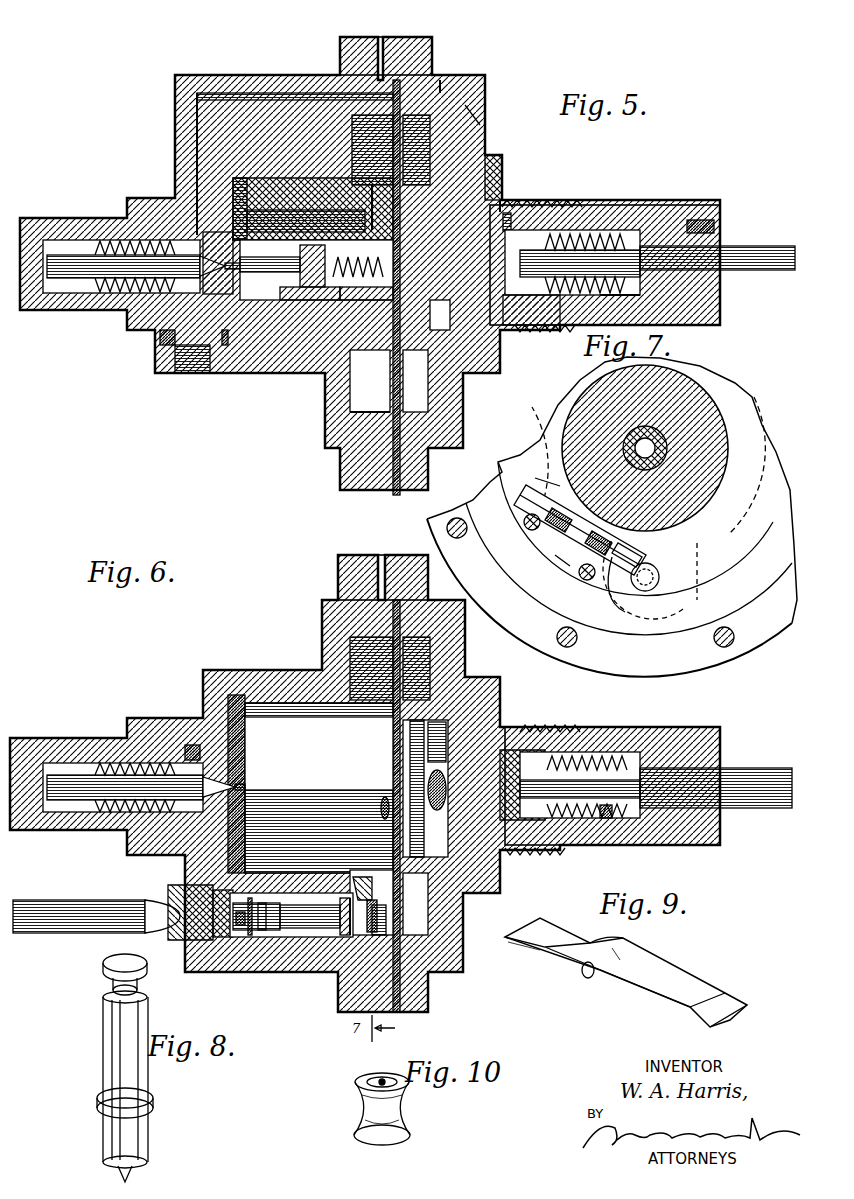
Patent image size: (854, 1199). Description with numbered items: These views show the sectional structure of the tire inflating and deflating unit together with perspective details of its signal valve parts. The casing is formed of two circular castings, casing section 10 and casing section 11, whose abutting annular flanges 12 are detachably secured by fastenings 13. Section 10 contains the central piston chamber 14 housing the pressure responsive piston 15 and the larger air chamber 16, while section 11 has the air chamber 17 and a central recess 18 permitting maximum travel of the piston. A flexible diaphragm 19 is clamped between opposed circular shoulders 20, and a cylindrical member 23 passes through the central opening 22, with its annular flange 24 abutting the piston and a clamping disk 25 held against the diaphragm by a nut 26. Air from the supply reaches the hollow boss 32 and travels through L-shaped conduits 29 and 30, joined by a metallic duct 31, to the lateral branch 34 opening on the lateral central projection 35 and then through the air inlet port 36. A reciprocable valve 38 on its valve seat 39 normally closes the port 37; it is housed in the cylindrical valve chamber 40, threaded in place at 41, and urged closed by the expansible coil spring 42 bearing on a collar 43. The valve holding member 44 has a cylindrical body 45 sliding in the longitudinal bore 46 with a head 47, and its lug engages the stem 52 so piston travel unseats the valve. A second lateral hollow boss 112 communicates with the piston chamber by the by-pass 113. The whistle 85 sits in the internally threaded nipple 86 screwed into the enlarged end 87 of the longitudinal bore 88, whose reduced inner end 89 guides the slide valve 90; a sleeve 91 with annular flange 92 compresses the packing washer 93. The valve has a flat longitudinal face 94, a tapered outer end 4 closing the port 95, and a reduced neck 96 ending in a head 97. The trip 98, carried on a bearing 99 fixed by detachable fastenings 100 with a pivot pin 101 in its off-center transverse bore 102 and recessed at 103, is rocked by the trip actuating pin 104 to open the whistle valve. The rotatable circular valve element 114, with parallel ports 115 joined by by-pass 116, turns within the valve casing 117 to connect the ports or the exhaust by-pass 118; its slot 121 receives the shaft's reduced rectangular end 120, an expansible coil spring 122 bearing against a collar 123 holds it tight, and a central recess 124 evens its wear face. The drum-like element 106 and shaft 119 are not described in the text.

In FIG. 8, the tapered outer end 4 is at (130, 1172).
In FIG. 5, the casing section 10 is at (322, 76).
In FIG. 6, the casing section 10 is at (322, 612).
In FIG. 5, the casing section 11 is at (470, 80).
In FIG. 6, the casing section 11 is at (470, 680).
In FIG. 5, the annular flanges 12 is at (372, 37).
In FIG. 6, the annular flanges 12 is at (375, 552).
In FIG. 7, the annular flanges 12 is at (752, 650).
In FIG. 7, the fastenings 13 is at (460, 538).
In FIG. 5, the piston chamber 14 is at (285, 350).
In FIG. 6, the piston chamber 14 is at (200, 862).
In FIG. 5, the piston 15 is at (283, 345).
In FIG. 6, the piston 15 is at (300, 705).
In FIG. 7, the piston 15 is at (700, 412).
In FIG. 5, the air chamber 16 is at (372, 130).
In FIG. 7, the air chamber 16 is at (635, 498).
In FIG. 5, the air chamber 17 is at (420, 130).
In FIG. 6, the air chamber 17 is at (416, 668).
In FIG. 5, the central recess 18 is at (503, 202).
In FIG. 6, the central recess 18 is at (502, 886).
In FIG. 5, the flexible diaphragm 19 is at (330, 410).
In FIG. 6, the flexible diaphragm 19 is at (464, 948).
In FIG. 5, the circular shoulders 20 is at (398, 82).
In FIG. 6, the circular shoulders 20 is at (398, 600).
In FIG. 7, the circular shoulders 20 is at (629, 569).
In FIG. 5, the central opening 22 is at (378, 230).
In FIG. 5, the cylindrical member 23 is at (345, 280).
In FIG. 7, the cylindrical member 23 is at (667, 446).
In FIG. 5, the annular flange 24 is at (370, 381).
In FIG. 5, the clamping disk 25 is at (415, 381).
In FIG. 6, the clamping disk 25 is at (415, 904).
In FIG. 5, the nut 26 is at (491, 160).
In FIG. 6, the nut 26 is at (425, 752).
In FIG. 5, the L-shaped conduit 29 is at (203, 93).
In FIG. 5, the L-shaped conduit 30 is at (470, 112).
In FIG. 5, the metallic duct 31 is at (441, 82).
In FIG. 5, the hollow boss 32 is at (160, 210).
In FIG. 5, the lateral branch 34 is at (542, 203).
In FIG. 5, the lateral central projection 35 is at (507, 213).
In FIG. 5, the air inlet port 36 is at (440, 315).
In FIG. 6, the air inlet port 36 is at (515, 750).
In FIG. 5, the port 37 is at (275, 222).
In FIG. 6, the port 37 is at (245, 762).
In FIG. 5, the reciprocable valve 38 is at (135, 278).
In FIG. 6, the reciprocable valve 38 is at (82, 780).
In FIG. 5, the valve seat 39 is at (232, 285).
In FIG. 6, the valve seat 39 is at (162, 851).
In FIG. 5, the cylindrical valve chamber 40 is at (55, 311).
In FIG. 6, the cylindrical valve chamber 40 is at (30, 742).
In FIG. 5, the threaded connection 41 is at (160, 322).
In FIG. 6, the threaded connection 41 is at (160, 718).
In FIG. 5, the expansible coil spring 42 is at (105, 292).
In FIG. 6, the expansible coil spring 42 is at (106, 765).
In FIG. 5, the collar 43 is at (165, 345).
In FIG. 6, the collar 43 is at (188, 745).
In FIG. 5, the valve holding member 44 is at (272, 290).
In FIG. 5, the cylindrical body 45 is at (310, 287).
In FIG. 5, the longitudinal bore 46 is at (305, 300).
In FIG. 7, the longitudinal bore 46 is at (656, 449).
In FIG. 5, the head 47 is at (350, 300).
In FIG. 5, the stem 52 is at (222, 270).
In FIG. 6, the whistle 85 is at (38, 906).
In FIG. 6, the internally threaded nipple 86 is at (183, 940).
In FIG. 6, the enlarged end 87 is at (222, 938).
In FIG. 6, the longitudinal bore 88 is at (306, 929).
In FIG. 6, the reduced inner end 89 is at (345, 936).
In FIG. 6, the slide valve 90 is at (352, 937).
In FIG. 8, the slide valve 90 is at (103, 1026).
In FIG. 6, the sleeve 91 is at (250, 936).
In FIG. 6, the annular flange 92 is at (266, 931).
In FIG. 6, the packing washer 93 is at (262, 931).
In FIG. 10, the packing washer 93 is at (376, 1080).
In FIG. 8, the flat longitudinal face 94 is at (152, 1095).
In FIG. 6, the port 95 is at (240, 926).
In FIG. 6, the reduced neck 96 is at (375, 937).
In FIG. 8, the reduced neck 96 is at (112, 988).
In FIG. 9, the reduced neck 96 is at (654, 970).
In FIG. 6, the head 97 is at (378, 914).
In FIG. 7, the head 97 is at (660, 578).
In FIG. 8, the head 97 is at (125, 962).
In FIG. 6, the trip 98 is at (371, 902).
In FIG. 7, the trip 98 is at (643, 580).
In FIG. 7, the bearing 99 is at (566, 546).
In FIG. 7, the detachable fastenings 100 is at (527, 530).
In FIG. 7, the pivot pin 101 is at (558, 560).
In FIG. 6, the transverse bore 102 is at (371, 668).
In FIG. 9, the transverse bore 102 is at (583, 978).
In FIG. 7, the recess 103 is at (640, 562).
In FIG. 9, the recess 103 is at (735, 1003).
In FIG. 6, the trip actuating pin 104 is at (383, 797).
In FIG. 7, the trip actuating pin 104 is at (545, 478).
In FIG. 6, the drum 106 is at (286, 842).
In FIG. 5, the lateral hollow boss 112 is at (182, 373).
In FIG. 5, the by-pass 113 is at (225, 345).
In FIG. 5, the rotatable circular valve element 114 is at (545, 329).
In FIG. 6, the rotatable circular valve element 114 is at (516, 852).
In FIG. 5, the parallel ports 115 is at (586, 250).
In FIG. 6, the parallel ports 115 is at (580, 789).
In FIG. 5, the by-pass 116 is at (612, 240).
In FIG. 5, the valve casing 117 is at (706, 207).
In FIG. 6, the valve casing 117 is at (586, 736).
In FIG. 5, the by-pass 118 is at (480, 374).
In FIG. 5, the shaft 119 is at (742, 270).
In FIG. 6, the shaft 119 is at (662, 768).
In FIG. 6, the reduced rectangular end 120 is at (555, 812).
In FIG. 5, the slot 121 is at (370, 394).
In FIG. 5, the expansible coil spring 122 is at (695, 220).
In FIG. 6, the expansible coil spring 122 is at (607, 818).
In FIG. 5, the collar 123 is at (628, 296).
In FIG. 5, the central recess 124 is at (527, 326).
In FIG. 6, the central recess 124 is at (548, 728).